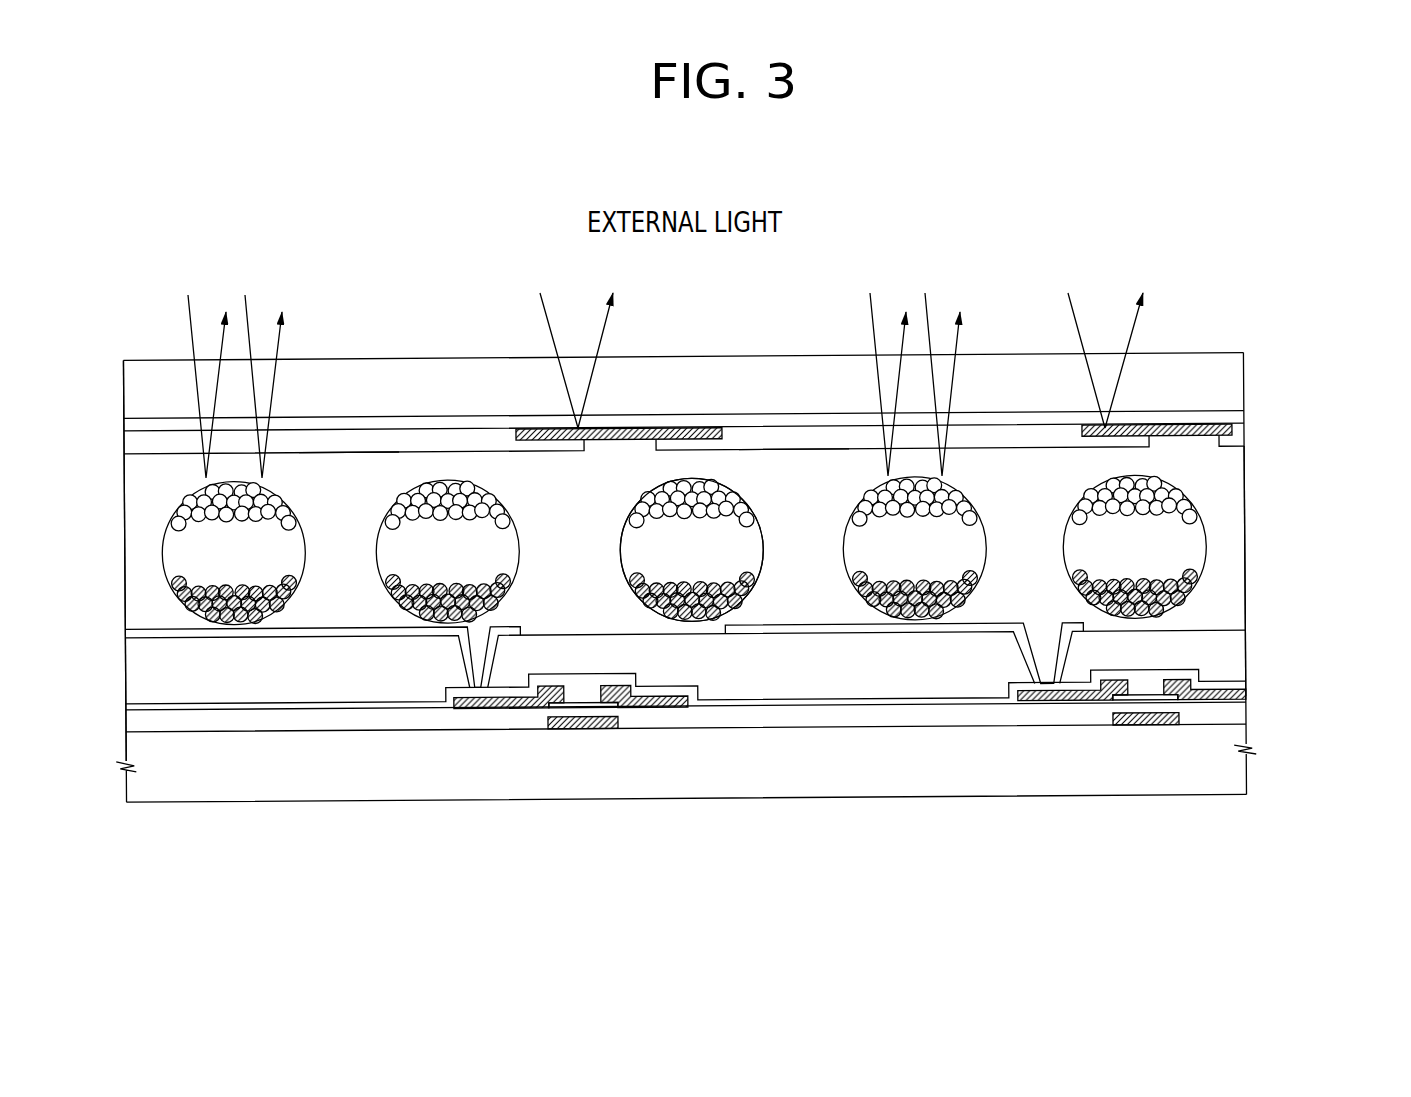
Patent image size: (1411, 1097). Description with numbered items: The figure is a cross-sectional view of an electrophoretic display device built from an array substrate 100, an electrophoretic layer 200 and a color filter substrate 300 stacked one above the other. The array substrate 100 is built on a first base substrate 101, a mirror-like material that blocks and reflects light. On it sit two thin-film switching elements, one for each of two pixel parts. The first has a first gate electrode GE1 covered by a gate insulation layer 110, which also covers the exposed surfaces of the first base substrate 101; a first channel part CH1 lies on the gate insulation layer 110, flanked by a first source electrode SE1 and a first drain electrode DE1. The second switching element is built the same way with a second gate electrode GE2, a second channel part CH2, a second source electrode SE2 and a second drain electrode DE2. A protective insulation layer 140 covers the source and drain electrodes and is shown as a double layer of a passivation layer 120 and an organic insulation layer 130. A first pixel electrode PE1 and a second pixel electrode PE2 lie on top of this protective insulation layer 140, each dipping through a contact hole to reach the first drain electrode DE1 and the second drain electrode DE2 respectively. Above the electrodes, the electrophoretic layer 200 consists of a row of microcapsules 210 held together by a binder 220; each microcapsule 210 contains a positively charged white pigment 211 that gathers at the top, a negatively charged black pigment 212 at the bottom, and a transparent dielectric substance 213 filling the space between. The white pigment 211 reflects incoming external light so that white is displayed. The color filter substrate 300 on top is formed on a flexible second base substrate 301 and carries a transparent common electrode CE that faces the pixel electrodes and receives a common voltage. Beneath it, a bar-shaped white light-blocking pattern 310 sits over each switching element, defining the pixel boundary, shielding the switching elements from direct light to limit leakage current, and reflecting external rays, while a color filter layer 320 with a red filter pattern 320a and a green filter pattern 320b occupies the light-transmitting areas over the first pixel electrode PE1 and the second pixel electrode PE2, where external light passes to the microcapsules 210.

The array substrate 100 is at (107, 632).
The first base substrate 101 is at (1240, 737).
The gate insulation layer 110 is at (1240, 711).
The passivation layer 120 is at (1240, 689).
The organic insulation layer 130 is at (1240, 652).
The protective insulation layer 140 is at (1338, 639).
The electrophoretic layer 200 is at (107, 457).
The microcapsule 210 is at (517, 518).
The white pigment 211 is at (735, 493).
The black pigment 212 is at (745, 588).
The transparent dielectric substance 213 is at (745, 548).
The binder 220 is at (1222, 546).
The color filter substrate 300 is at (107, 360).
The second base substrate 301 is at (1237, 376).
The common electrode CE is at (1240, 417).
The white light-blocking pattern 310 is at (1240, 430).
The color filter layer 320 is at (1240, 441).
The red filter pattern 320a is at (343, 437).
The green filter pattern 320b is at (793, 433).
The first pixel electrode PE1 is at (320, 627).
The second pixel electrode PE2 is at (900, 635).
The first drain electrode DE1 is at (495, 707).
The second drain electrode DE2 is at (1053, 703).
The first gate electrode GE1 is at (561, 729).
The second gate electrode GE2 is at (1120, 729).
The first channel part CH1 is at (588, 703).
The second channel part CH2 is at (1143, 700).
The first source electrode SE1 is at (663, 707).
The second source electrode SE2 is at (1207, 703).